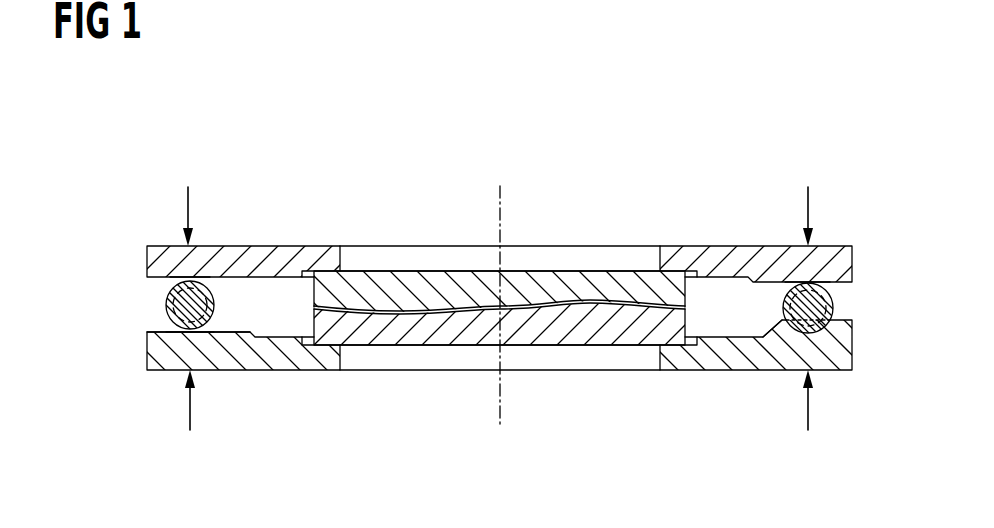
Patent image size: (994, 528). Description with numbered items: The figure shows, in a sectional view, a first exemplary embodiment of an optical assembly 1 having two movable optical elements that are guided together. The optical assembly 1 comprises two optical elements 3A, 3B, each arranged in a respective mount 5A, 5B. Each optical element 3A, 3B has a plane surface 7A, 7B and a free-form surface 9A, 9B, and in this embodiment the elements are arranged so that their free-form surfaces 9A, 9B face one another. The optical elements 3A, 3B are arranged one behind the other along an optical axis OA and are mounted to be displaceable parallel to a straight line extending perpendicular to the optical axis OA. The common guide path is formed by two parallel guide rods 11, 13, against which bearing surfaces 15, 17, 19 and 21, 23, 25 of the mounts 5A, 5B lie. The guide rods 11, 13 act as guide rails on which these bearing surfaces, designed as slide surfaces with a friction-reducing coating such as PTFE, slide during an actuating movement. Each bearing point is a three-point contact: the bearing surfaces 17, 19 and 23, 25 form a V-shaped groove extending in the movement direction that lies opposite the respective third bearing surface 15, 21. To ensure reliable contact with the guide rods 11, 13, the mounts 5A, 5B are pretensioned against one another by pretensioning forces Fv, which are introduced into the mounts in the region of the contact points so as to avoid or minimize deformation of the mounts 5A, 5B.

The optical assembly 1 is at (695, 131).
The optical element 3A is at (362, 274).
The optical element 3B is at (368, 350).
The mount 5A is at (285, 253).
The mount 5B is at (305, 356).
The plane surface 7A is at (622, 262).
The plane surface 7B is at (633, 352).
The free-form surface 9A is at (411, 318).
The free-form surface 9B is at (443, 301).
The guide rod 11 is at (166, 314).
The guide rod 13 is at (834, 302).
The bearing surface 15 is at (168, 333).
The bearing surface 17 is at (214, 298).
The bearing surface 19 is at (167, 303).
The bearing surface 21 is at (801, 285).
The bearing surface 23 is at (777, 318).
The bearing surface 25 is at (822, 310).
The optical axis OA is at (500, 203).
The pretensioning force Fv is at (188, 205).